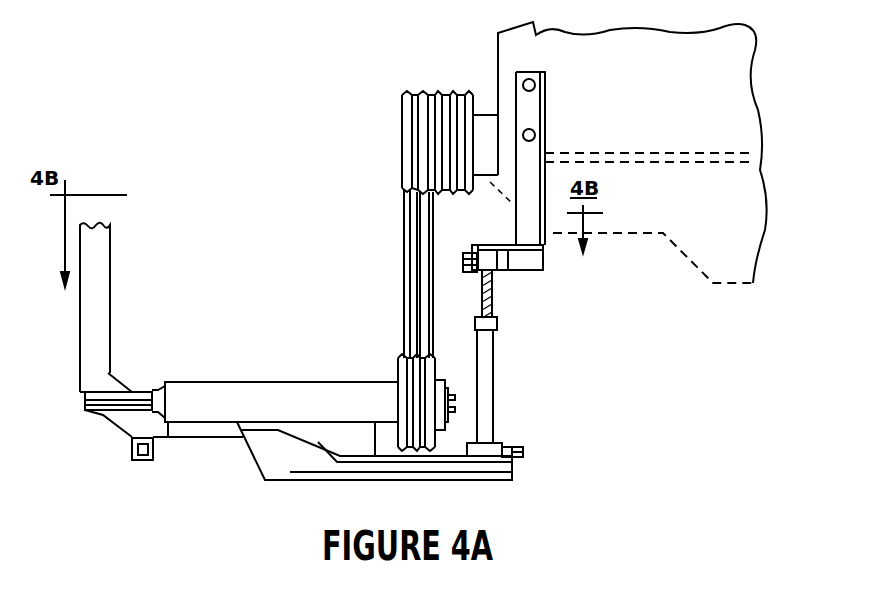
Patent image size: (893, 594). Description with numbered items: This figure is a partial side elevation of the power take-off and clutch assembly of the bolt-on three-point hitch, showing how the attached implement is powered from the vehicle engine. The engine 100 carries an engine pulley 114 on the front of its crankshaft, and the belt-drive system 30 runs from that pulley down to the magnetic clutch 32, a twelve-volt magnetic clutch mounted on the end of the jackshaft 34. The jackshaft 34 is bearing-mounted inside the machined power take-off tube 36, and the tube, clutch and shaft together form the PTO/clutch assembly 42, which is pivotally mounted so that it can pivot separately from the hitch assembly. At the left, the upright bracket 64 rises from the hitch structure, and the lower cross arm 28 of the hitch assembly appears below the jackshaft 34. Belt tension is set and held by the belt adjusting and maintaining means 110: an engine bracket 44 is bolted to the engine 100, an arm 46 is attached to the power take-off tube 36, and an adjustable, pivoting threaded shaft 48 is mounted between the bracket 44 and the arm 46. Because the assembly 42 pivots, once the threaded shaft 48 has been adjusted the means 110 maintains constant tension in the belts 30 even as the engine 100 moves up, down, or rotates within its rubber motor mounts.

The engine 100 is at (650, 127).
The engine pulley 114 is at (400, 128).
The belt-drive system 30 is at (402, 233).
The magnetic clutch 32 is at (397, 374).
The power take-off tube 36 is at (234, 378).
The jackshaft 34 is at (133, 389).
The upright bracket 64 is at (115, 283).
The PTO/clutch assembly 42 is at (256, 309).
The lower cross arm 28 is at (141, 461).
The engine bracket 44 is at (528, 274).
The threaded shaft 48 is at (480, 295).
The arm 46 is at (498, 387).
The belt adjusting and maintaining means 110 is at (632, 403).